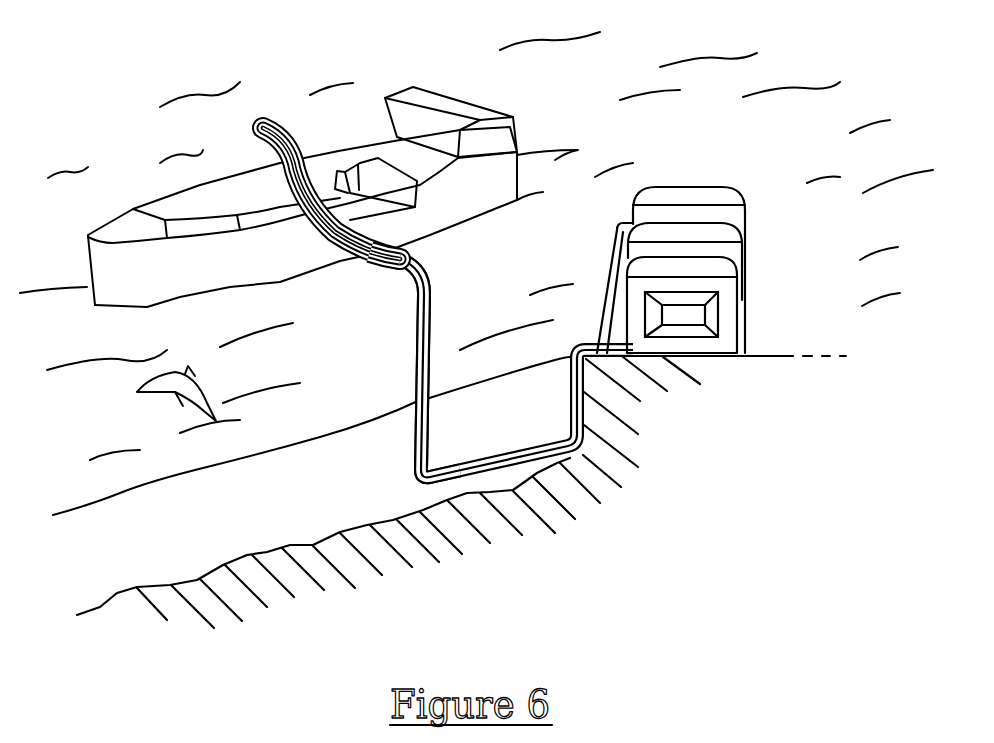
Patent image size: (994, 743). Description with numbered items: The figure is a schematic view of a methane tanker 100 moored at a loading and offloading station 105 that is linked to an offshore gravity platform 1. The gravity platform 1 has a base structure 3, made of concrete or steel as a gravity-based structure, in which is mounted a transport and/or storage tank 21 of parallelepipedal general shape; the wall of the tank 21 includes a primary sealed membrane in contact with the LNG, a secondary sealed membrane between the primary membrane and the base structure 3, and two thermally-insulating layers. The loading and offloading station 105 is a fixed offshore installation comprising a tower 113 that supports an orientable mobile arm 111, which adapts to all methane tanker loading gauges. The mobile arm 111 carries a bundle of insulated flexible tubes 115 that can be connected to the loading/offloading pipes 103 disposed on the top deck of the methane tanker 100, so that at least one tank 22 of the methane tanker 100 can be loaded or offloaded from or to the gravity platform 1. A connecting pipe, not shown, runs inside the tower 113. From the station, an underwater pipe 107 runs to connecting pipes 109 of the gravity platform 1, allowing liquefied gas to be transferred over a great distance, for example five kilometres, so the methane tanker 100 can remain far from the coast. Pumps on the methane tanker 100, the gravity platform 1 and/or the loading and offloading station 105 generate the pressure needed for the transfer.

The gravity platform 1 is at (734, 290).
The base structure 3 is at (725, 326).
The transport and/or storage tank 21 is at (687, 315).
The tank 22 is at (367, 171).
The methane tanker 100 is at (489, 96).
The loading/offloading pipes 103 is at (294, 186).
The loading and offloading station 105 is at (415, 389).
The underwater pipe 107 is at (496, 456).
The connecting pipes 109 is at (601, 282).
The mobile arm 111 is at (433, 296).
The tower 113 is at (411, 443).
The bundle of insulated flexible tubes 115 is at (381, 272).